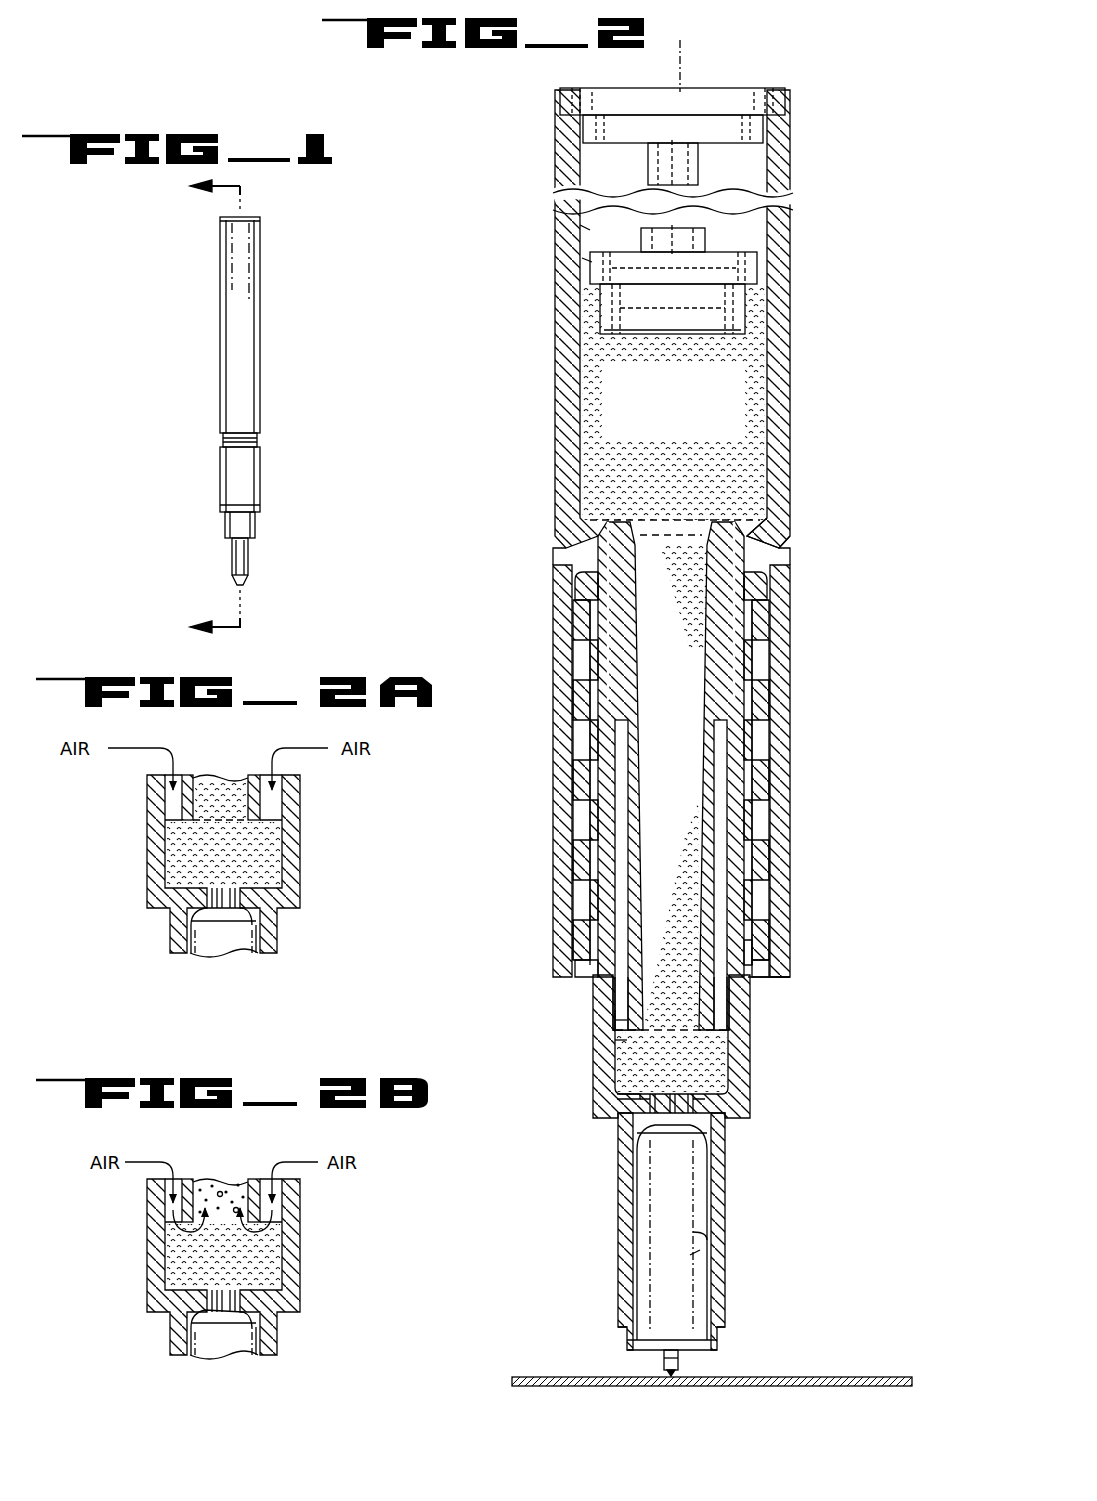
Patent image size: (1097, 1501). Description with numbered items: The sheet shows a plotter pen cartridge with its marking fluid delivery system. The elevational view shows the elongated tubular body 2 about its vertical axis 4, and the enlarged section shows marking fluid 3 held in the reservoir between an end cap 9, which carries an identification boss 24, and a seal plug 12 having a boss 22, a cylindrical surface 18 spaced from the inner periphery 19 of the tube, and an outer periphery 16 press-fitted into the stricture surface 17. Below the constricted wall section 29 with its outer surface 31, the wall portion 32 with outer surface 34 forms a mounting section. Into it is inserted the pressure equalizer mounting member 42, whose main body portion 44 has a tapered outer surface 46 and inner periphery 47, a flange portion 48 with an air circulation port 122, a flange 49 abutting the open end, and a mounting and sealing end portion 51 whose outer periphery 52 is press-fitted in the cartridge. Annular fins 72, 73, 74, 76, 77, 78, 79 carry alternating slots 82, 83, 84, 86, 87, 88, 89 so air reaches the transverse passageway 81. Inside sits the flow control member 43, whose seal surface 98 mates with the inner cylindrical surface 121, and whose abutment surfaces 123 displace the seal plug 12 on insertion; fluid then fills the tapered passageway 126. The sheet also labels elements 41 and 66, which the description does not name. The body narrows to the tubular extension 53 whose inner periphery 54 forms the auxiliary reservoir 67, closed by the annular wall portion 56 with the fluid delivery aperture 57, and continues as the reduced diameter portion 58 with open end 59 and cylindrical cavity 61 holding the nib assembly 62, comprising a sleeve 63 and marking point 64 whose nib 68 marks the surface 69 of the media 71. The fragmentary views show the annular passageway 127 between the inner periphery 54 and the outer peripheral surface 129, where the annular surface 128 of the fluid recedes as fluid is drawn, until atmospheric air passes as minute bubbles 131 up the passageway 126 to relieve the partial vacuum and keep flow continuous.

In FIG. 1, the tubular body 2 is at (202, 302).
In FIG. 2, the marking fluid 3 is at (673, 405).
In FIG. 1, the marking fluid 3 is at (238, 320).
In FIG. 2, the vertical axis 4 is at (680, 74).
In FIG. 2, the end cap 9 is at (721, 100).
In FIG. 2, the seal plug 12 is at (636, 252).
In FIG. 2, the outer periphery of seal portion 16 is at (589, 312).
In FIG. 2, the inner peripheral cylindrical surface 17 is at (744, 553).
In FIG. 2, the peripheral cylindrical surface 18 is at (592, 262).
In FIG. 2, the inner periphery of tube 19 is at (588, 228).
In FIG. 2, the boss 22 is at (670, 238).
In FIG. 2, the boss 24 is at (677, 167).
In FIG. 2, the constricted wall section 29 is at (774, 536).
In FIG. 1, the outer peripheral surface 31 is at (258, 441).
In FIG. 2, the wall portion 32 is at (782, 680).
In FIG. 1, the wall portion 32 is at (236, 483).
In FIG. 2, the outer peripheral surface 34 is at (782, 762).
In FIG. 2, the inner sleeve 41 is at (743, 648).
In FIG. 2, the pressure equalizer mounting member 42 is at (770, 980).
In FIG. 2, the flow control member 43 is at (590, 556).
In FIG. 2, the main body portion 44 is at (768, 820).
In FIG. 2, the tapered outer peripheral surface 46 is at (751, 880).
In FIG. 2, the tapered inner periphery 47 is at (754, 906).
In FIG. 2, the flange portion 48 is at (768, 960).
In FIG. 2, the radially extending flange 49 is at (769, 984).
In FIG. 2, the mounting and sealing end portion 51 is at (754, 576).
In FIG. 2, the outer periphery of sealing end portion 52 is at (764, 593).
In FIG. 2, the tubular extension 53 is at (741, 1039).
In FIG. 1, the tubular extension 53 is at (236, 524).
In FIG. 2A, the tubular extension 53 is at (263, 842).
In FIG. 2B, the tubular extension 53 is at (259, 1245).
In FIG. 2, the inner periphery of tubular extension 54 is at (715, 1063).
In FIG. 2, the annular wall portion 56 is at (698, 1109).
In FIG. 2, the fluid delivery aperture 57 is at (691, 1146).
In FIG. 2, the reduced diameter portion 58 is at (721, 1214).
In FIG. 1, the reduced diameter portion 58 is at (236, 562).
In FIG. 2A, the reduced diameter portion 58 is at (275, 939).
In FIG. 2B, the reduced diameter portion 58 is at (280, 1334).
In FIG. 2, the open end 59 is at (721, 1341).
In FIG. 2, the cylindrical cavity 61 is at (700, 1241).
In FIG. 2, the nib assembly 62 is at (684, 1250).
In FIG. 2, the cylindrical sleeve 63 is at (689, 1283).
In FIG. 2, the marking point 64 is at (680, 1359).
In FIG. 2, the nozzle insert 66 is at (689, 1150).
In FIG. 2, the auxiliary reservoir 67 is at (610, 1112).
In FIG. 2, the nib 68 is at (666, 1372).
In FIG. 2, the surface of media 69 is at (814, 1378).
In FIG. 2, the media 71 is at (580, 636).
In FIG. 2, the annular fin 72 is at (580, 680).
In FIG. 2, the annular fin 73 is at (757, 705).
In FIG. 2, the annular fin 74 is at (582, 752).
In FIG. 2, the annular fin 76 is at (762, 795).
In FIG. 2, the annular fin 77 is at (582, 835).
In FIG. 2, the annular fin 78 is at (762, 893).
In FIG. 2, the lowest annular fin 79 is at (584, 904).
In FIG. 2, the transverse passageway 81 is at (578, 654).
In FIG. 2, the slot 82 is at (760, 665).
In FIG. 2, the slot 83 is at (580, 720).
In FIG. 2, the slot 84 is at (755, 742).
In FIG. 2, the slot 86 is at (582, 795).
In FIG. 2, the slot 87 is at (762, 836).
In FIG. 2, the slot 88 is at (582, 868).
In FIG. 2, the slot 89 is at (769, 934).
In FIG. 2, the cylindrical outer seal surface 98 is at (586, 580).
In FIG. 2, the inner cylindrical surface 121 is at (586, 612).
In FIG. 2, the air circulation port 122 is at (597, 976).
In FIG. 2, the upper surfaces of abutments 123 is at (720, 518).
In FIG. 2, the tapered passageway 126 is at (688, 731).
In FIG. 2, the annular passageway 127 is at (628, 1023).
In FIG. 2A, the annular passageway 127 is at (265, 812).
In FIG. 2B, the annular passageway 127 is at (261, 1220).
In FIG. 2, the annular surface 128 is at (626, 1035).
In FIG. 2, the outer peripheral surface 129 is at (624, 1002).
In FIG. 2A, the outer peripheral surface 129 is at (178, 810).
In FIG. 2B, the outer peripheral surface 129 is at (178, 1218).
In FIG. 2B, the minute bubbles 131 is at (216, 1180).